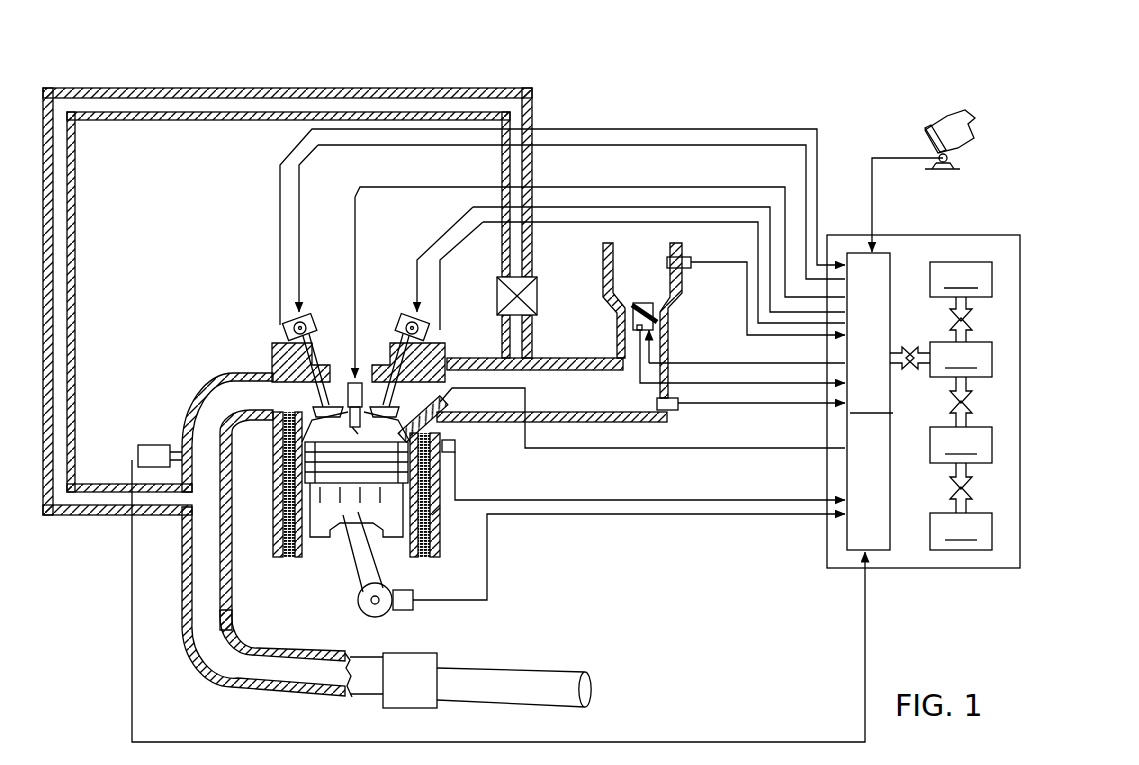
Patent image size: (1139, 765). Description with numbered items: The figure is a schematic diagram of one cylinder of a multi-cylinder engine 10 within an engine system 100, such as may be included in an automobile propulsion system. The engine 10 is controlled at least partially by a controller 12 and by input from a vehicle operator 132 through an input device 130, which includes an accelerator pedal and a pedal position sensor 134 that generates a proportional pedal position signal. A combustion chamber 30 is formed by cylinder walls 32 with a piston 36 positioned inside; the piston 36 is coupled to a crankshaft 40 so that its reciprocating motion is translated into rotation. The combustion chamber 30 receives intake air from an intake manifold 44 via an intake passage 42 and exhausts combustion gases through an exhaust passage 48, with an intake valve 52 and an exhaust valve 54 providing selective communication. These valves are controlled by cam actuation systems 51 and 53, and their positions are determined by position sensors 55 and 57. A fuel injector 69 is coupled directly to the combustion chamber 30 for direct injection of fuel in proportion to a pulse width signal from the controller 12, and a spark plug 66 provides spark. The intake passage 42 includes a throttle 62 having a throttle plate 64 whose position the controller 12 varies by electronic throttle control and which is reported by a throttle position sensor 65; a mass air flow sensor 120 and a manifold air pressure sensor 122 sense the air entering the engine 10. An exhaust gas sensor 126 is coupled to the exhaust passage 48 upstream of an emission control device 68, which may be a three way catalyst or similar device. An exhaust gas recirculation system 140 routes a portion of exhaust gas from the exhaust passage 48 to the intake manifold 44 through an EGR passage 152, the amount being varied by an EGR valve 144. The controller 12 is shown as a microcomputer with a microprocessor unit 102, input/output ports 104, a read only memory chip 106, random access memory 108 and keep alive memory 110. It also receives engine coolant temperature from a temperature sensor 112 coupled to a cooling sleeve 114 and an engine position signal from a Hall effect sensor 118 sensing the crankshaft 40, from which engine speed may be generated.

The engine 10 is at (220, 308).
The controller 12 is at (1016, 237).
The combustion chamber 30 is at (278, 522).
The cylinder walls 32 is at (305, 545).
The piston 36 is at (345, 512).
The crankshaft 40 is at (366, 612).
The intake passage 42 is at (651, 280).
The intake manifold 44 is at (596, 401).
The exhaust passage 48 is at (254, 405).
The cam actuation system 51 is at (412, 318).
The intake valve 52 is at (405, 375).
The cam actuation system 53 is at (302, 318).
The exhaust valve 54 is at (300, 395).
The position sensor 55 is at (430, 340).
The position sensor 57 is at (290, 335).
The throttle 62 is at (657, 315).
The throttle plate 64 is at (632, 307).
The throttle position sensor 65 is at (637, 328).
The spark plug 66 is at (360, 385).
The emission control device 68 is at (410, 680).
The fuel injector 69 is at (445, 428).
The engine system 100 is at (1050, 66).
The microprocessor unit 102 is at (995, 357).
The input/output ports 104 is at (890, 262).
The read only memory chip 106 is at (995, 278).
The random access memory 108 is at (995, 443).
The keep alive memory 110 is at (995, 530).
The temperature sensor 112 is at (455, 452).
The cooling sleeve 114 is at (432, 515).
The Hall effect sensor 118 is at (408, 610).
The mass air flow sensor 120 is at (690, 258).
The manifold air pressure sensor 122 is at (676, 411).
The exhaust gas sensor 126 is at (138, 448).
The input device 130 is at (925, 136).
The vehicle operator 132 is at (976, 118).
The pedal position sensor 134 is at (953, 162).
The exhaust gas recirculation system 140 is at (412, 80).
The EGR valve 144 is at (530, 300).
The EGR passage 152 is at (285, 90).